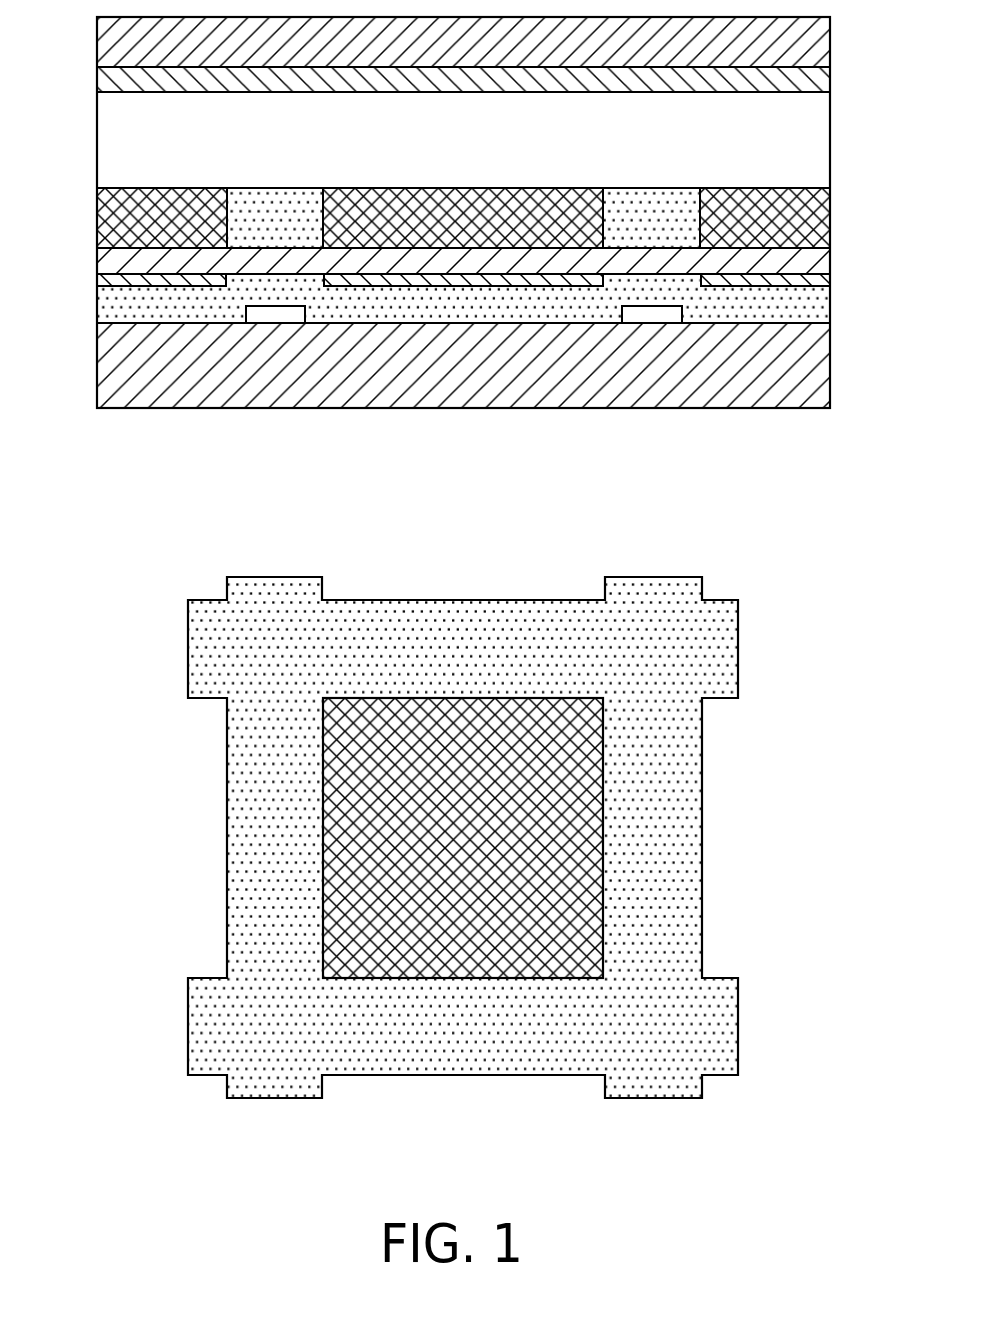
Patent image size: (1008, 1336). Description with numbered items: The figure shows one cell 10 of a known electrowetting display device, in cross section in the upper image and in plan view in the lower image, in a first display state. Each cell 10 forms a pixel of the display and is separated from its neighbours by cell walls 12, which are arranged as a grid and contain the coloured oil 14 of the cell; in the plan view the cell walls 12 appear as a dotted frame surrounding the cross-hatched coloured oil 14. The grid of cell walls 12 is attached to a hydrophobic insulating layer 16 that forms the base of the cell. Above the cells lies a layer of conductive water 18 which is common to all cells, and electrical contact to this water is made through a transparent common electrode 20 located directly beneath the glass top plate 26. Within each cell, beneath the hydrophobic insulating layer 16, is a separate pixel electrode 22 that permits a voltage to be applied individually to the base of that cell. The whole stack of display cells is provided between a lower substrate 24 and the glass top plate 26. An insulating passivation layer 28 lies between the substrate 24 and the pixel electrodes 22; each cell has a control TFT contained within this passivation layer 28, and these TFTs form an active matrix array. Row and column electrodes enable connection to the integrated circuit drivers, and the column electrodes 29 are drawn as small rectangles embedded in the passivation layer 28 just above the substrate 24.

The cell 10 is at (760, 748).
The cell walls 12 is at (261, 233).
The coloured oil 14 is at (148, 233).
The hydrophobic insulating layer 16 is at (818, 262).
The conductive water 18 is at (818, 138).
The transparent common electrode 20 is at (818, 82).
The pixel electrode 22 is at (97, 282).
The lower substrate 24 is at (818, 368).
The glass top plate 26 is at (818, 38).
The insulating passivation layer 28 is at (818, 305).
The column electrodes 29 is at (278, 315).